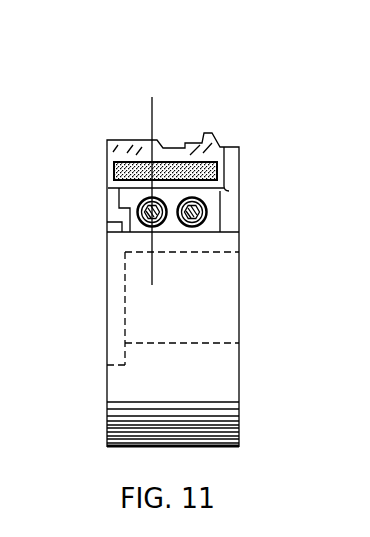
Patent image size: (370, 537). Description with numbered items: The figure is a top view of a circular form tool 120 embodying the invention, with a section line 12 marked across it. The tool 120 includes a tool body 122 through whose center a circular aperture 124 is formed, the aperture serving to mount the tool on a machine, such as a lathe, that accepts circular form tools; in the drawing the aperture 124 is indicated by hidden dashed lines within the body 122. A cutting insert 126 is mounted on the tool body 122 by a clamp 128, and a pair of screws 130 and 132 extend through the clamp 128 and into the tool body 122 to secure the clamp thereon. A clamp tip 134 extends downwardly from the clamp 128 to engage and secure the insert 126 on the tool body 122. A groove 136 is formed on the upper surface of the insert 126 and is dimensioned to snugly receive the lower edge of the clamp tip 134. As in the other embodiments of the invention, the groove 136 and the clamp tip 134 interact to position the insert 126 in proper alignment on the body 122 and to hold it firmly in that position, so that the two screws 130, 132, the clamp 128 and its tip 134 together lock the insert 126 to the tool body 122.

The circular form tool 120 is at (129, 102).
The tool body 122 is at (218, 375).
The circular aperture 124 is at (205, 252).
The cutting insert 126 is at (128, 146).
The clamp 128 is at (228, 191).
The screw 130 is at (205, 218).
The screw 132 is at (140, 222).
The clamp tip 134 is at (203, 165).
The groove 136 is at (113, 168).
The section line 12- 12 is at (178, 285).